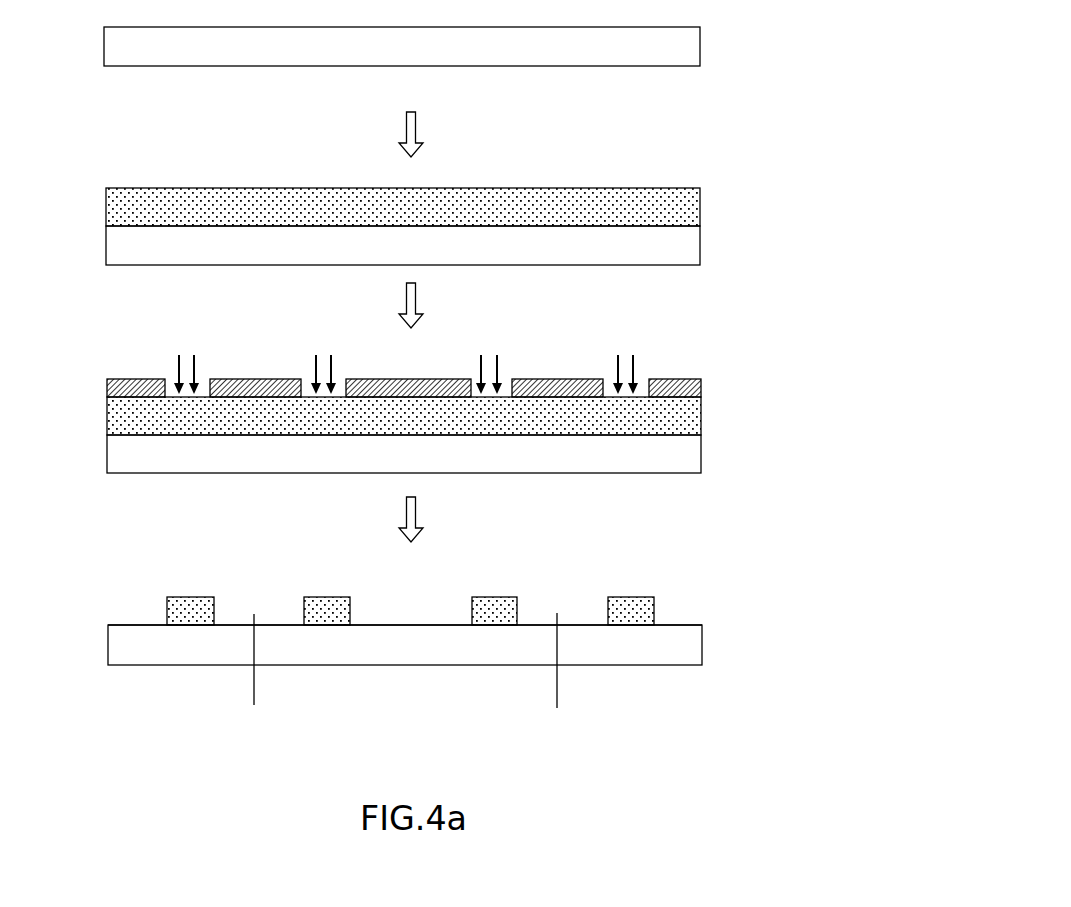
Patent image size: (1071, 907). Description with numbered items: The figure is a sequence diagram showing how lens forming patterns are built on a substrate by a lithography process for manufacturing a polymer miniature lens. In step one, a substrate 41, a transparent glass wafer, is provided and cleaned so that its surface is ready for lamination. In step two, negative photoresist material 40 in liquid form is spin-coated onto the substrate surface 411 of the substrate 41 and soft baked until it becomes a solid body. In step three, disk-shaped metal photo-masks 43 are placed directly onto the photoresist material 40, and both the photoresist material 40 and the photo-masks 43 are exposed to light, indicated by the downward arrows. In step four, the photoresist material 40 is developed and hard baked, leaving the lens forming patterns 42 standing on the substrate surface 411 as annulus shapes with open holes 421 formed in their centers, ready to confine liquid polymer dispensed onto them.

The substrate 41 is at (682, 51).
The photoresist material 40 is at (677, 205).
The photo-masks 43 is at (678, 379).
The lens forming patterns 42 is at (482, 607).
The substrate surface 411 is at (682, 620).
The open holes 421 is at (409, 679).